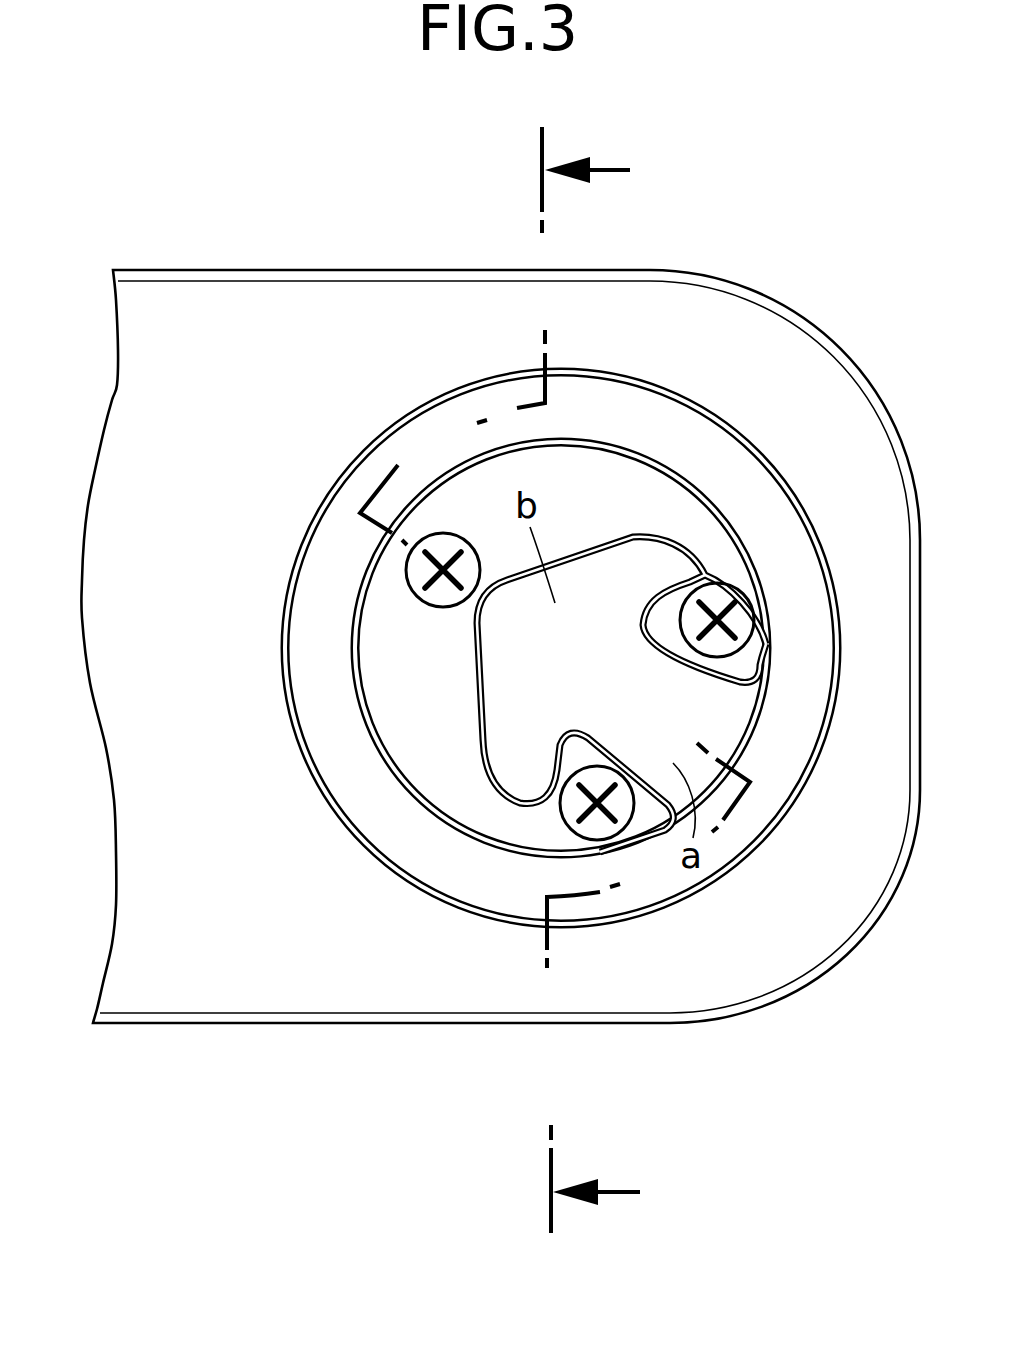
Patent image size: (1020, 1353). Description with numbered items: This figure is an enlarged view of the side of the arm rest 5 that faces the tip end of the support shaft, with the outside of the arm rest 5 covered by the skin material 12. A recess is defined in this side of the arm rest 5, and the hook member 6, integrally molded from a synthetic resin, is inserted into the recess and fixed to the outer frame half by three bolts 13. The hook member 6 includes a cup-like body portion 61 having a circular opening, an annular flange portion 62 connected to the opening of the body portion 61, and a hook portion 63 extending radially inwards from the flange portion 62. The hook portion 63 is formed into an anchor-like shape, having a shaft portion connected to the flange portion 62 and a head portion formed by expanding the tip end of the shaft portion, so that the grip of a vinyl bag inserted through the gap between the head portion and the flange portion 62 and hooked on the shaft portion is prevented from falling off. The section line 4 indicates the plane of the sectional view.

The section line 4- 4 is at (555, 680).
The arm rest 5 is at (238, 262).
The hook member 6 is at (793, 490).
The skin material 12 is at (266, 997).
The bolts 13 is at (417, 575).
The body portion 61 is at (614, 517).
The flange portion 62 is at (680, 433).
The hook portion 63 is at (503, 682).